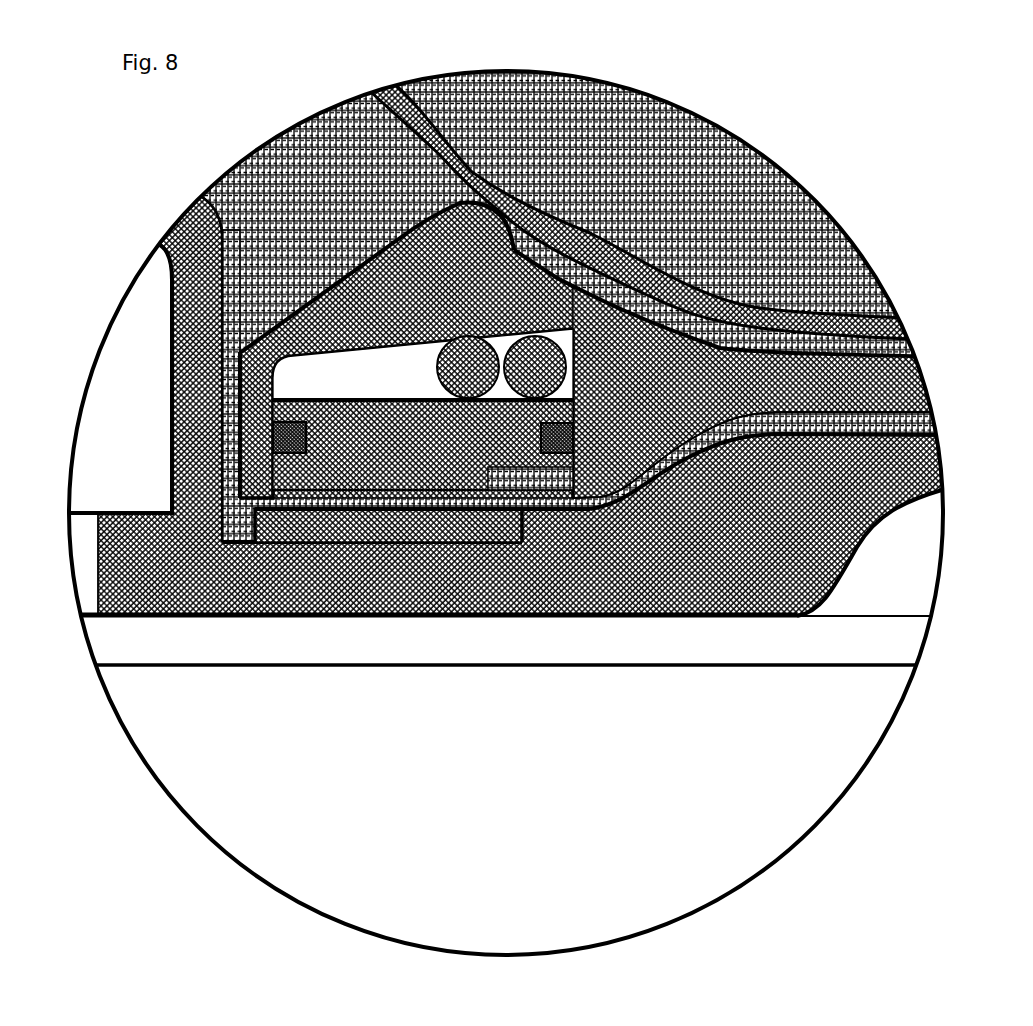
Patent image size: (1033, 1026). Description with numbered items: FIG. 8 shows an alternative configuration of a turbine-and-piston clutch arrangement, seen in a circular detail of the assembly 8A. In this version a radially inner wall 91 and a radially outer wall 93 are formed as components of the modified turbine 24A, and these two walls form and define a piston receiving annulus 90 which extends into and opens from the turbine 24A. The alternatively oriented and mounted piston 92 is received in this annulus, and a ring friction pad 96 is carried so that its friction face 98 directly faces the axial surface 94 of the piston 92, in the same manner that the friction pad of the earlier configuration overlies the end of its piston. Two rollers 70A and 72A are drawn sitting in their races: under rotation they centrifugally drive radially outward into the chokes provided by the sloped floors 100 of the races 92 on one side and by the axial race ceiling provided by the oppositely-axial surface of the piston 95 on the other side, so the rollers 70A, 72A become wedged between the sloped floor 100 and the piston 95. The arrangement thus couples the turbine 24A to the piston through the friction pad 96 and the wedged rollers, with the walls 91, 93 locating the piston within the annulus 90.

The housing body 8A is at (723, 545).
The turbine 24A is at (683, 378).
The roller 70A is at (472, 358).
The roller 72A is at (536, 354).
The piston receiving annulus 90 is at (357, 383).
The radially inner wall 91 is at (577, 418).
The piston 92 is at (415, 358).
The radially outer wall 93 is at (273, 411).
The axial surface 94 is at (425, 492).
The piston 95 is at (362, 450).
The ring friction pad 96 is at (327, 527).
The friction face 98 is at (326, 503).
The sloped floor 100 is at (385, 357).